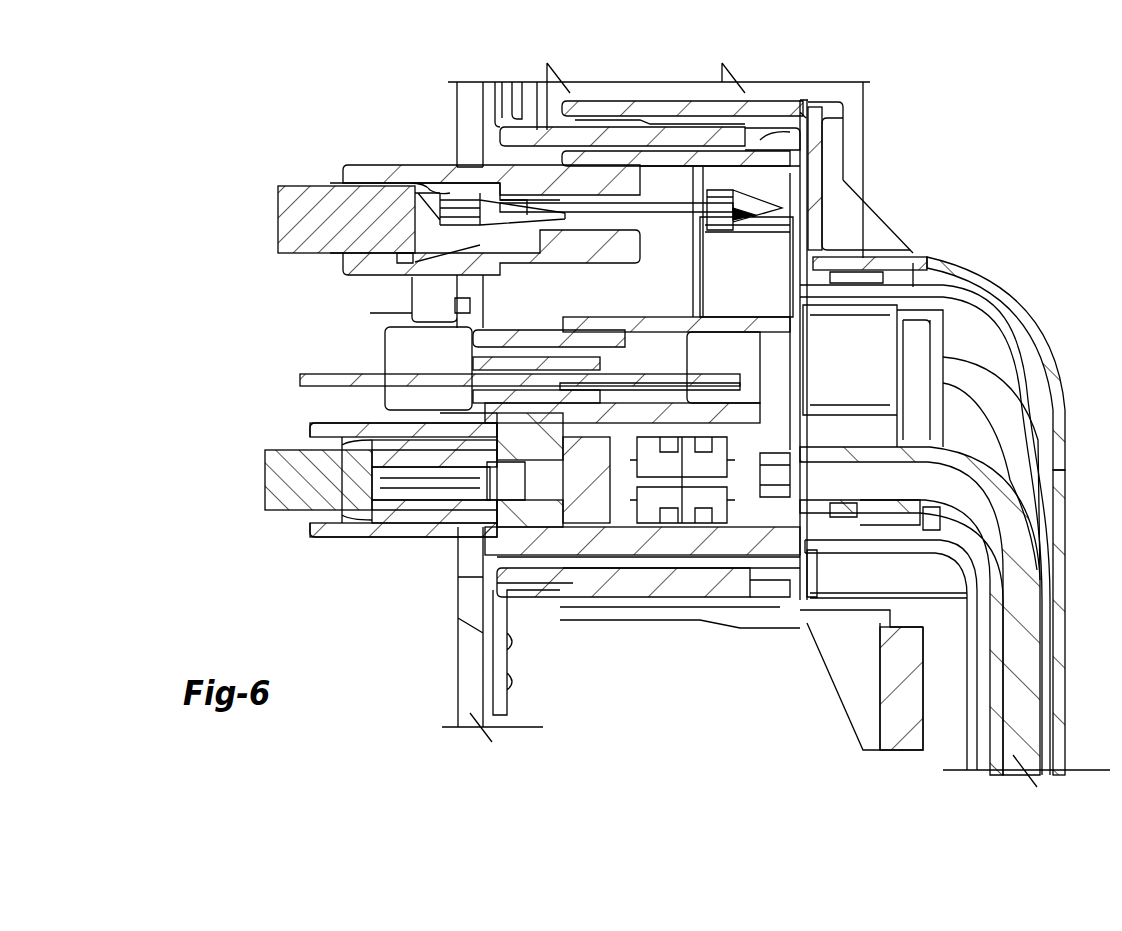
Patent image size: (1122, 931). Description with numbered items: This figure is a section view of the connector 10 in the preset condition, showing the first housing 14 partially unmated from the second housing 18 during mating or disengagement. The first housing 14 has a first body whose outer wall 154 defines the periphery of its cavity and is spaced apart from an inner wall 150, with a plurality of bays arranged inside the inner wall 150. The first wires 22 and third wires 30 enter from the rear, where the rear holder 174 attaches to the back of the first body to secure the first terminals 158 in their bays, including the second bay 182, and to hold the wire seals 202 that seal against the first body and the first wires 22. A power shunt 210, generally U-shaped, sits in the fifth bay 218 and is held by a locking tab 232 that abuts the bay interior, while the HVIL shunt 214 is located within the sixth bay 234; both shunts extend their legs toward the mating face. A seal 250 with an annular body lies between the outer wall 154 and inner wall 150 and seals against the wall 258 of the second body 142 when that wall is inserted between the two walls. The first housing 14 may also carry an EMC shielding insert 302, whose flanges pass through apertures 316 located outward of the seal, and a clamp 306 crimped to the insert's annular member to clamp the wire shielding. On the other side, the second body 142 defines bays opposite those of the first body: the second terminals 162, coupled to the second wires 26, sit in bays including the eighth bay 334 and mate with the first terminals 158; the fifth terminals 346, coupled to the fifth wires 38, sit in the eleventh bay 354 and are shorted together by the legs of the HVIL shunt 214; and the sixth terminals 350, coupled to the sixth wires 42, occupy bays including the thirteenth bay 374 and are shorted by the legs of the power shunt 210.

The connector 10 is at (963, 94).
The first housing 14 is at (845, 732).
The second housing 18 is at (436, 636).
The first wires 22 is at (1030, 660).
The second wires 26 is at (283, 512).
The third wires 30 is at (997, 398).
The fifth wires 38 is at (316, 373).
The sixth wires 42 is at (296, 186).
The second body 142 is at (535, 140).
The inner wall 150 is at (590, 158).
The outer wall 154 is at (626, 108).
The first terminals 158 is at (720, 540).
The second terminals 162 is at (598, 540).
The rear holder 174 is at (935, 318).
The second bay 182 is at (620, 430).
The wire seals 202 is at (912, 508).
The power shunt 210 is at (655, 212).
The HVIL shunt 214 is at (655, 375).
The fifth bay 218 is at (716, 190).
The locking tab 232 is at (803, 163).
The sixth bay 234 is at (712, 372).
The seal 250 is at (762, 140).
The wall 258 is at (640, 587).
The EMC shielding insert 302 is at (807, 190).
The clamp 306 is at (870, 283).
The apertures 316 is at (802, 110).
The eighth bay 334 is at (410, 540).
The fifth terminals 346 is at (560, 400).
The sixth terminals 350 is at (527, 203).
The eleventh bay 354 is at (562, 327).
The thirteenth bay 374 is at (552, 257).